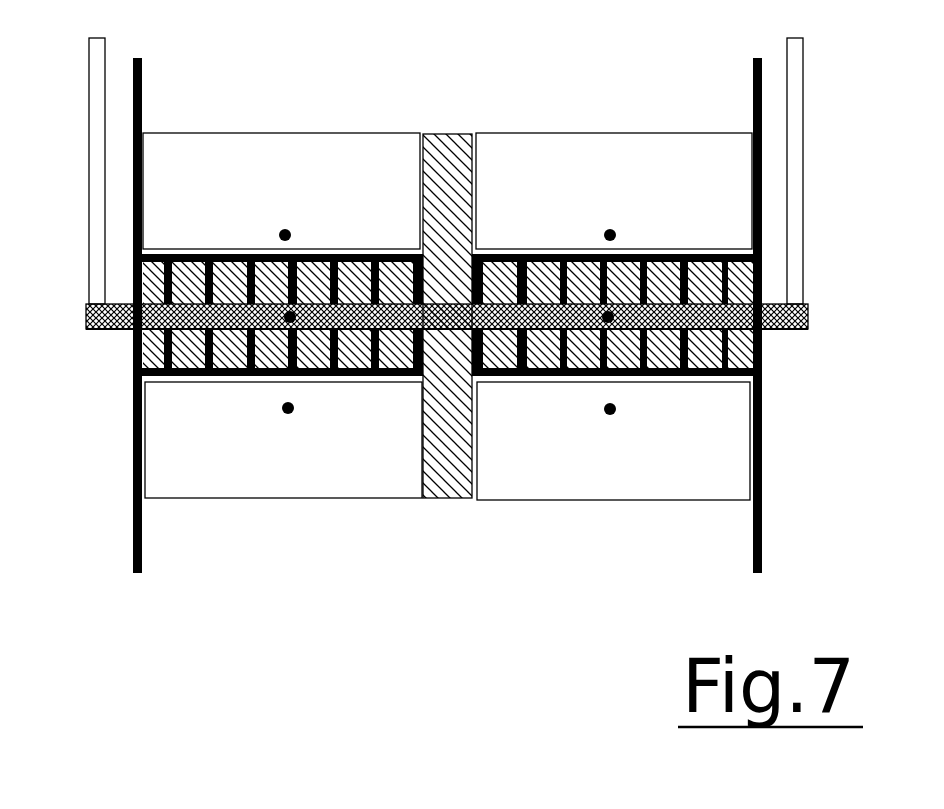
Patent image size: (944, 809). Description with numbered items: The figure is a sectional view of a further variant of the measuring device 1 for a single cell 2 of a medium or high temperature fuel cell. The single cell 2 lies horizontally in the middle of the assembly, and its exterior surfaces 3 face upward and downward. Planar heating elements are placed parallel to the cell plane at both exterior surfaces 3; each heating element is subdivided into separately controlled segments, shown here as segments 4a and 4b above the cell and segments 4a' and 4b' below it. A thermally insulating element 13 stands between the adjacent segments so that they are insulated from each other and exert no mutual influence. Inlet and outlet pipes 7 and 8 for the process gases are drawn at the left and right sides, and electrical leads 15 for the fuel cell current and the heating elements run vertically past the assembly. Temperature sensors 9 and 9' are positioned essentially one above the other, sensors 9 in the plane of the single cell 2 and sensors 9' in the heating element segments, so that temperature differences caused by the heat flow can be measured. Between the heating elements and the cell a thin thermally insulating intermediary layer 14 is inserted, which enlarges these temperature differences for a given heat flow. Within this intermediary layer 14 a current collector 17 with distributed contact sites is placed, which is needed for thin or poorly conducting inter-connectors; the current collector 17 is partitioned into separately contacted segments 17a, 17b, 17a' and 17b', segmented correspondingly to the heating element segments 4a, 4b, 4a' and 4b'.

The measuring device 1 is at (447, 294).
The single cell 2 is at (800, 330).
The exterior surface 3 is at (770, 300).
The heating element segment 4a is at (281, 191).
The heating element segment 4b is at (614, 191).
The heating element segment 4a' is at (283, 440).
The heating element segment 4b' is at (613, 441).
The inlet pipe 7 is at (96, 166).
The outlet pipe 8 is at (795, 157).
The temperature sensor 9 is at (492, 253).
The temperature sensor 9' is at (473, 312).
The thermally insulating element 13 is at (444, 153).
The thermally insulating intermediary layer 14 is at (135, 362).
The electrical lead 15 is at (142, 92).
The current collector 17 is at (183, 245).
The current collector segment 17a is at (283, 178).
The current collector segment 17b is at (612, 179).
The current collector segment 17a' is at (283, 454).
The current collector segment 17b' is at (612, 454).